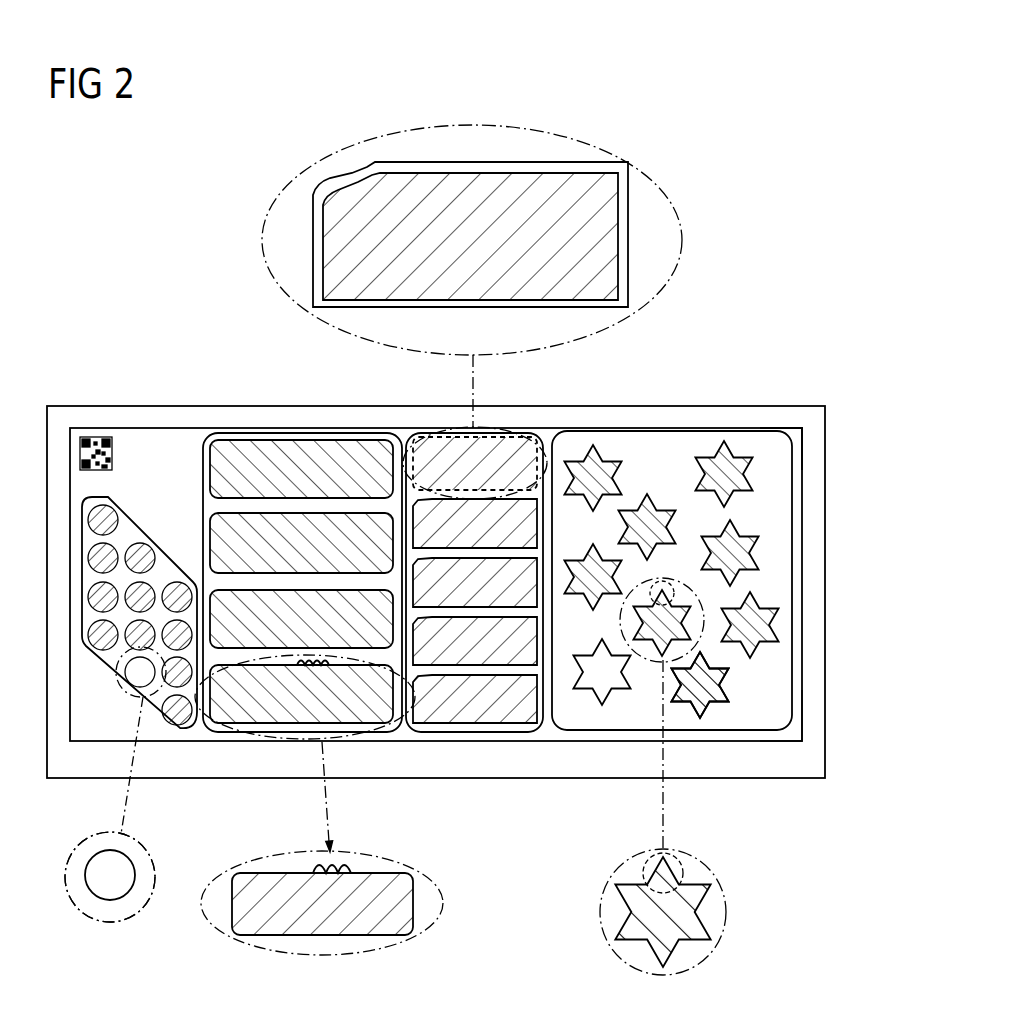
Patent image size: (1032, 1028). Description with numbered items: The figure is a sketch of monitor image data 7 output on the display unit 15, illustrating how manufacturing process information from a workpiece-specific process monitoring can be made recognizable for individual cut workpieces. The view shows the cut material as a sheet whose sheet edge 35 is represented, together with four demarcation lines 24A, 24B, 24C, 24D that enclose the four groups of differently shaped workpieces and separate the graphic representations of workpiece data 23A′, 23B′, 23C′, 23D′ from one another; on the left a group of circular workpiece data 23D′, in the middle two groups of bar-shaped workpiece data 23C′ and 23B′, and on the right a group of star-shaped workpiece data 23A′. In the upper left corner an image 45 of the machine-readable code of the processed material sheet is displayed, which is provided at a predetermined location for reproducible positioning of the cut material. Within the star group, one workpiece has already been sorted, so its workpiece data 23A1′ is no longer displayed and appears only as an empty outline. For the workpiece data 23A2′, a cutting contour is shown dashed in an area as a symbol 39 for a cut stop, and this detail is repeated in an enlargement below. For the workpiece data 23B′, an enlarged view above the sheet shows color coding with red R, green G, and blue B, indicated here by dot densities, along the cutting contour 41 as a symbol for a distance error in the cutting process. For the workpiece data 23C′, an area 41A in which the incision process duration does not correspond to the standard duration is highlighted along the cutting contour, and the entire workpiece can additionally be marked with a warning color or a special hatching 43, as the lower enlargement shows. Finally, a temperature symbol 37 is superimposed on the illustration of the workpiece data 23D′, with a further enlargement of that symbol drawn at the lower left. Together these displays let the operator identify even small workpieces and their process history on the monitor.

The monitor image data 7 is at (775, 452).
The display unit 15 is at (838, 528).
The demarcation line 24A is at (577, 750).
The demarcation line 24B is at (510, 750).
The demarcation line 24C is at (247, 750).
The demarcation line 24D is at (150, 522).
The workpiece data 23A′ is at (730, 705).
The workpiece data of already sorted workpiece 23A1′ is at (628, 697).
The workpiece data 23A2′ is at (688, 628).
The workpiece data 23B′ is at (490, 280).
The workpiece data 23C′ is at (300, 700).
The workpiece data 23D′ is at (140, 689).
The sheet edge 35 is at (803, 706).
The temperature symbol 37 is at (92, 852).
The symbol for cut stop 39 is at (694, 849).
The cutting contour 41 is at (633, 186).
The highlighted area 41A is at (356, 856).
The special hatching 43 is at (388, 925).
The image of machine-readable code 45 is at (97, 426).
The green color coding G is at (330, 155).
The blue color coding B is at (482, 140).
The red color coding R is at (555, 148).